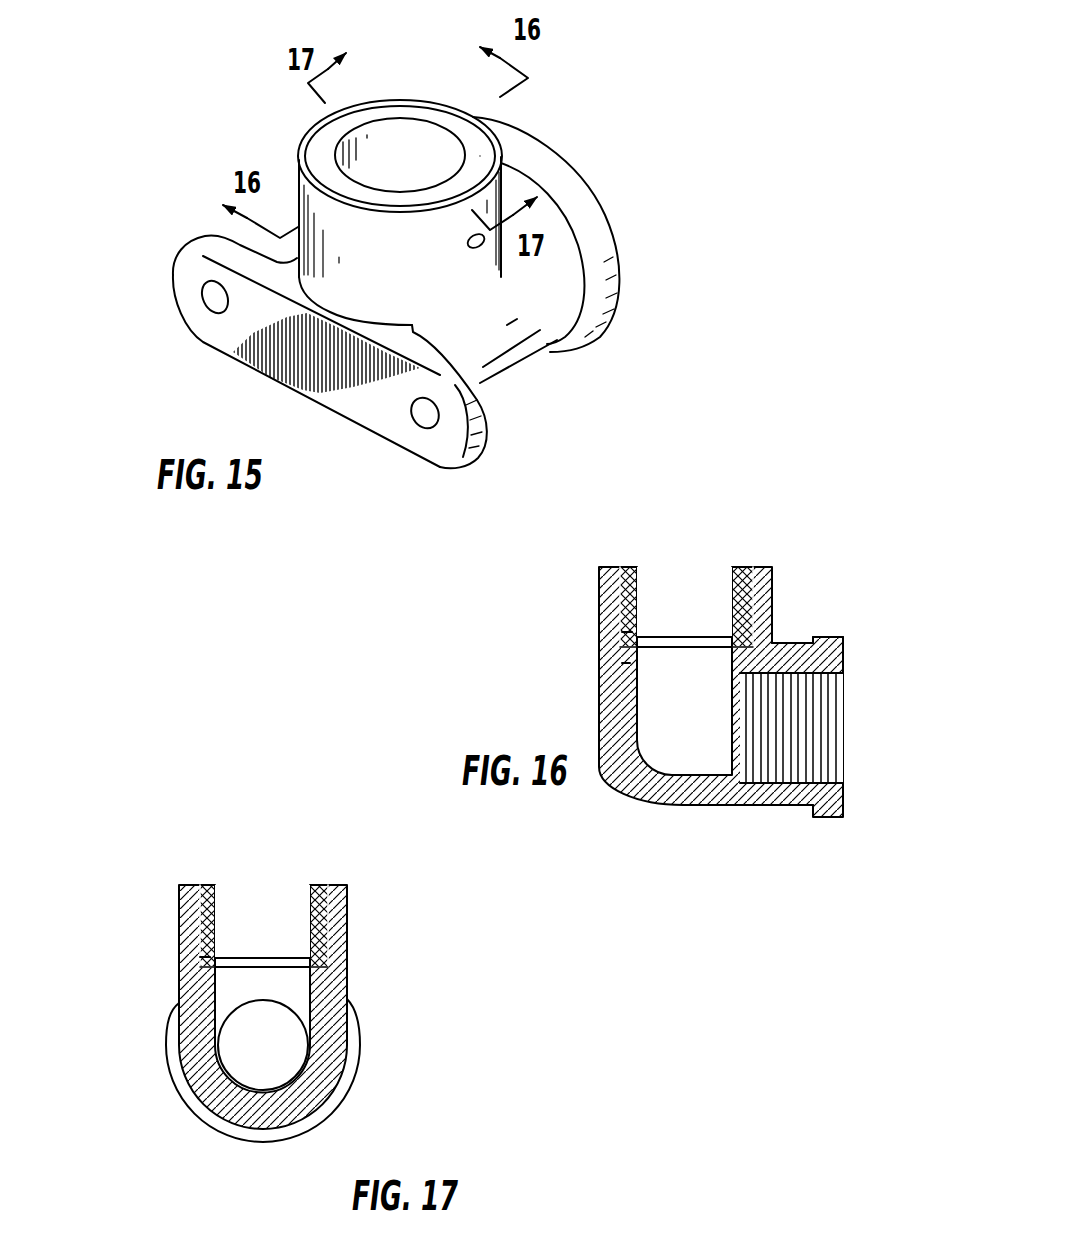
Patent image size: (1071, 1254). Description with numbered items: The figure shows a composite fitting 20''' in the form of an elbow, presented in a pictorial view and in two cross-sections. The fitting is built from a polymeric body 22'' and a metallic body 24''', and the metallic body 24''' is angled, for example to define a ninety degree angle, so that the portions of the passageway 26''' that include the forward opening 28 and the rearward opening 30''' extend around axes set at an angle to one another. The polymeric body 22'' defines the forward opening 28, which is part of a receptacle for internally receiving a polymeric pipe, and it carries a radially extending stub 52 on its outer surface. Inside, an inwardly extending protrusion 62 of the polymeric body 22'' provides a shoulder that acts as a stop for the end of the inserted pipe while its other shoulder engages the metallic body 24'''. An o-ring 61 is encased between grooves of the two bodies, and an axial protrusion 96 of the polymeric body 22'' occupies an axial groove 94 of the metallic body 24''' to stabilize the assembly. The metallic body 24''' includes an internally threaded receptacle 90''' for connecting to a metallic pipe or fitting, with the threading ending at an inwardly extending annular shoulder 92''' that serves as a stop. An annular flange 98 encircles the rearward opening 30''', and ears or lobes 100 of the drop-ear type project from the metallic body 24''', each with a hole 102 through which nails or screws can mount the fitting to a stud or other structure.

In FIG. 15, the composite fitting 20''' is at (750, 168).
In FIG. 16, the composite fitting 20''' is at (833, 479).
In FIG. 17, the composite fitting 20''' is at (501, 914).
In FIG. 15, the polymeric body 22'' is at (321, 144).
In FIG. 16, the polymeric body 22'' is at (653, 574).
In FIG. 17, the polymeric body 22'' is at (245, 888).
In FIG. 15, the metallic body 24''' is at (440, 278).
In FIG. 16, the metallic body 24''' is at (721, 747).
In FIG. 17, the metallic body 24''' is at (333, 1007).
In FIG. 15, the passageway 26''' is at (511, 123).
In FIG. 16, the passageway 26''' is at (684, 559).
In FIG. 17, the passageway 26''' is at (266, 879).
In FIG. 15, the forward opening 28 is at (365, 158).
In FIG. 16, the forward opening 28 is at (710, 564).
In FIG. 17, the forward opening 28 is at (294, 879).
In FIG. 16, the rearward opening 30''' is at (818, 785).
In FIG. 17, the rearward opening 30''' is at (254, 1098).
In FIG. 15, the stub 52 is at (481, 247).
In FIG. 17, the stub 52 is at (347, 922).
In FIG. 16, the o-ring 61 is at (598, 633).
In FIG. 17, the o-ring 61 is at (182, 957).
In FIG. 16, the inwardly extending protrusion 62 is at (677, 650).
In FIG. 17, the inwardly extending protrusion 62 is at (205, 995).
In FIG. 16, the internally threaded receptacle 90''' is at (876, 681).
In FIG. 16, the annular shoulder 92''' is at (716, 812).
In FIG. 16, the axial groove 94 is at (598, 663).
In FIG. 17, the axial protrusion 96 is at (347, 986).
In FIG. 15, the annular flange 98 is at (620, 290).
In FIG. 16, the annular flange 98 is at (810, 637).
In FIG. 17, the annular flange 98 is at (180, 1106).
In FIG. 15, the lobes 100 is at (172, 283).
In FIG. 15, the hole 102 is at (213, 300).